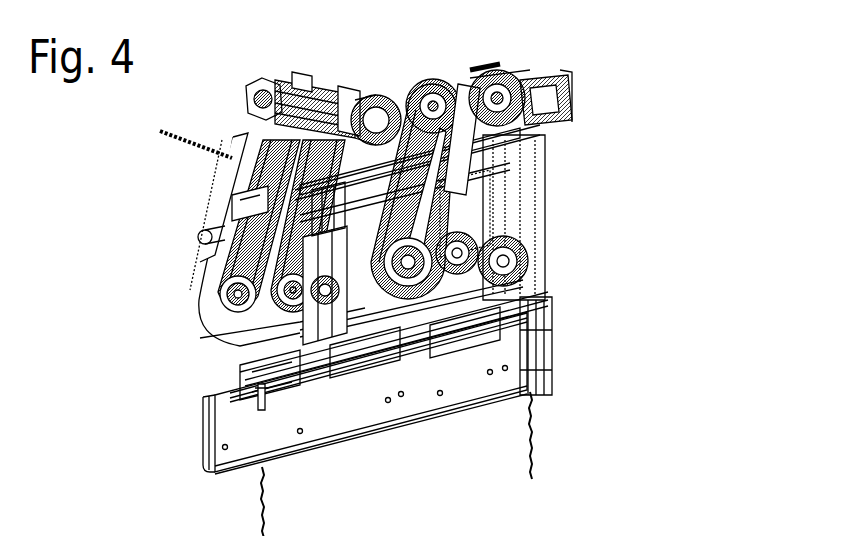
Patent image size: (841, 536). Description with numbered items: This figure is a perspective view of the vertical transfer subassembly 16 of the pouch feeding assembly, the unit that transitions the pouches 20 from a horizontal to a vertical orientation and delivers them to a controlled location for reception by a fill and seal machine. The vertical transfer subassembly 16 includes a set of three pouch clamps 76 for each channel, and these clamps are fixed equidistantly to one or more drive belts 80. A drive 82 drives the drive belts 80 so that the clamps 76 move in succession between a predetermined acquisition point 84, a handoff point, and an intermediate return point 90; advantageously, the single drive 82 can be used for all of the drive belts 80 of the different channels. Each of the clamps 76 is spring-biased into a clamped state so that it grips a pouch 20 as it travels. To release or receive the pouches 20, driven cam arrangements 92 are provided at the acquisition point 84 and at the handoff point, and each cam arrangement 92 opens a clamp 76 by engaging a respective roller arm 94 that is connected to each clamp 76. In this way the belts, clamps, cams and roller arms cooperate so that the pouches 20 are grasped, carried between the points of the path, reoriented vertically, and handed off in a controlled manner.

The vertical transfer subassembly 16 is at (640, 102).
The pouches 20 is at (532, 191).
The pouch clamps 76 is at (235, 198).
The drive belts 80 is at (417, 103).
The drive 82 is at (309, 94).
The acquisition point 84 is at (305, 396).
The intermediate return point 90 is at (492, 172).
The driven cam arrangements 92 is at (567, 75).
The roller arm 94 is at (530, 284).